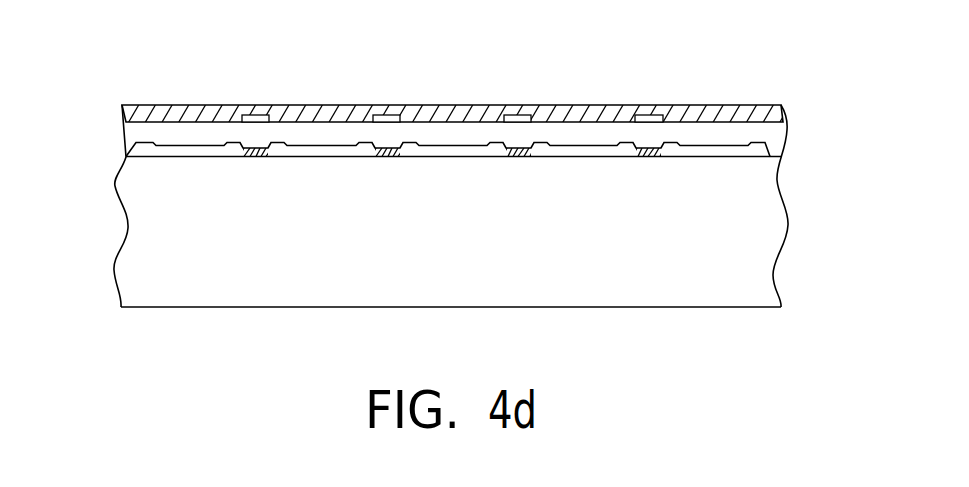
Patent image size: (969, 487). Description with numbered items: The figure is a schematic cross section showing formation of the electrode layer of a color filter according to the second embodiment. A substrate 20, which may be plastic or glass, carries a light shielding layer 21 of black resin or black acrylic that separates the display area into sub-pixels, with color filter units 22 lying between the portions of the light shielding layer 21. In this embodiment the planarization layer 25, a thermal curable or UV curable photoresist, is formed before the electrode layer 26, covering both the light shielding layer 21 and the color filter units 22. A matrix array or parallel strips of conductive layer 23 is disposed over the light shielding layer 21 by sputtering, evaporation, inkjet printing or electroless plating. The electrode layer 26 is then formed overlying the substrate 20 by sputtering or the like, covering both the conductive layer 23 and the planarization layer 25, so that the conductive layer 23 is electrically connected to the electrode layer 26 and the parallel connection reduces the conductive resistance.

The substrate 20 is at (297, 266).
The light shielding layer 21 is at (257, 150).
The color filter units 22 is at (203, 148).
The conductive layer 23 is at (650, 112).
The planarization layer 25 is at (135, 133).
The electrode layer 26 is at (782, 109).